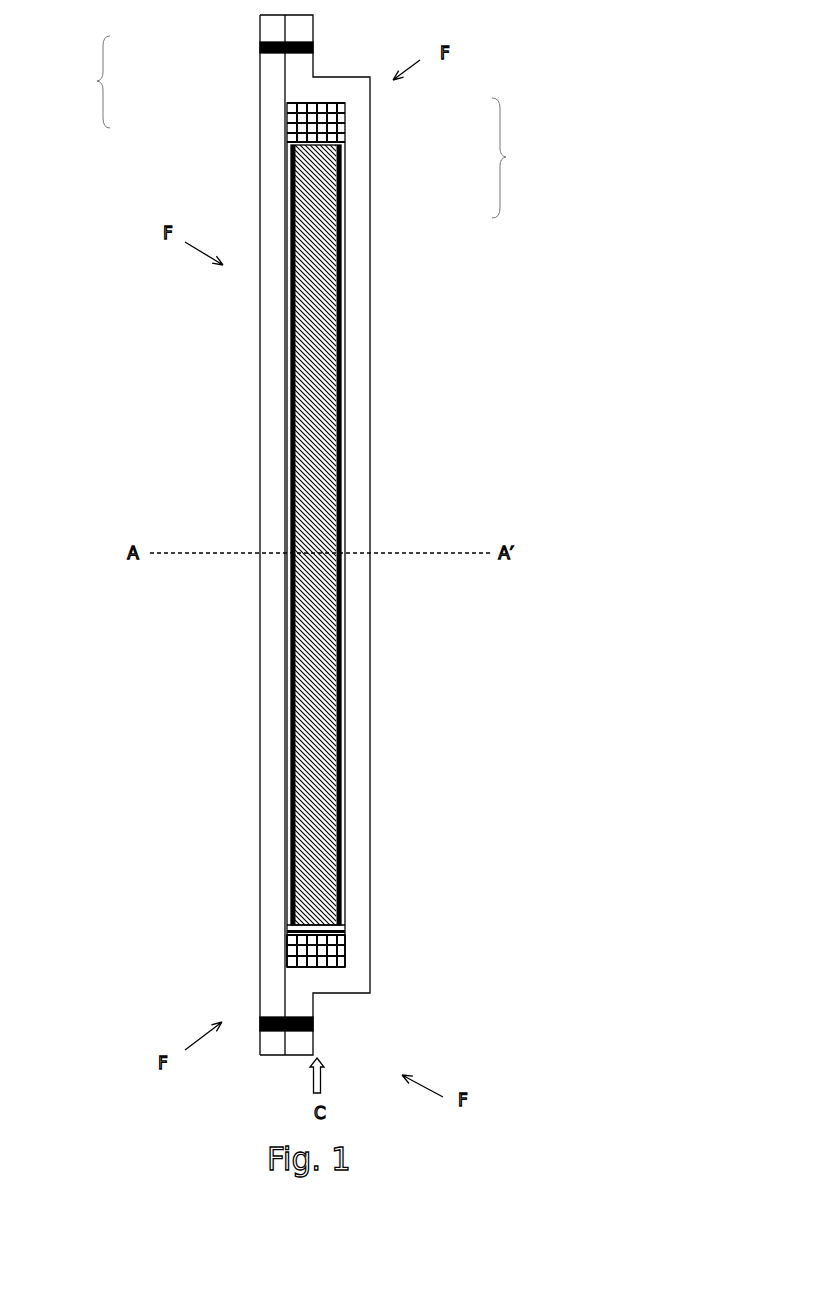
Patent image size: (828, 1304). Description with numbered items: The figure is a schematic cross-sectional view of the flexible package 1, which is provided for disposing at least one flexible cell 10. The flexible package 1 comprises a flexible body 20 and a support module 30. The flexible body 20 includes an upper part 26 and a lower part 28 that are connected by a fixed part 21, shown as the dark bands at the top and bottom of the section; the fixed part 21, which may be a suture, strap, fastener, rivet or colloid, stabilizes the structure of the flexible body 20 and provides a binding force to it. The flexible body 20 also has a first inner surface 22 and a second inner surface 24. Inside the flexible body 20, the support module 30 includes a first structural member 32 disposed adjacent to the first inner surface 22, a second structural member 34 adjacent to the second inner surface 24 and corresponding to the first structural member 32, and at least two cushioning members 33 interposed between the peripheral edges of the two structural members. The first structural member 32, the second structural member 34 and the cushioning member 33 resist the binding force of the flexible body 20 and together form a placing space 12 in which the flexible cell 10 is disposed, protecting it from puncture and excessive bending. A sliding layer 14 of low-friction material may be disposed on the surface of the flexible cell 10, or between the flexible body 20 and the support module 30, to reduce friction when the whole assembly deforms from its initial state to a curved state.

The flexible package 1 is at (371, 535).
The flexible cell 10 is at (290, 908).
The placing space 12 is at (340, 929).
The sliding layer 14 is at (343, 775).
The flexible body 20 is at (214, 535).
The fixed part 21 is at (280, 45).
The first inner surface 22 is at (342, 953).
The second inner surface 24 is at (287, 953).
The upper part 26 is at (300, 92).
The lower part 28 is at (268, 130).
The support module 30 is at (413, 532).
The cushioning member 33 is at (340, 118).
The first structural member 32 is at (345, 237).
The second structural member 34 is at (343, 168).